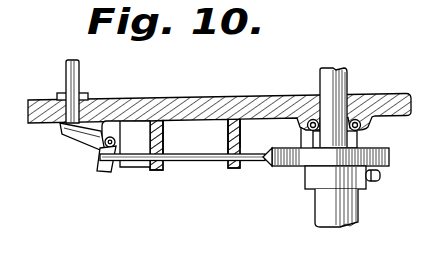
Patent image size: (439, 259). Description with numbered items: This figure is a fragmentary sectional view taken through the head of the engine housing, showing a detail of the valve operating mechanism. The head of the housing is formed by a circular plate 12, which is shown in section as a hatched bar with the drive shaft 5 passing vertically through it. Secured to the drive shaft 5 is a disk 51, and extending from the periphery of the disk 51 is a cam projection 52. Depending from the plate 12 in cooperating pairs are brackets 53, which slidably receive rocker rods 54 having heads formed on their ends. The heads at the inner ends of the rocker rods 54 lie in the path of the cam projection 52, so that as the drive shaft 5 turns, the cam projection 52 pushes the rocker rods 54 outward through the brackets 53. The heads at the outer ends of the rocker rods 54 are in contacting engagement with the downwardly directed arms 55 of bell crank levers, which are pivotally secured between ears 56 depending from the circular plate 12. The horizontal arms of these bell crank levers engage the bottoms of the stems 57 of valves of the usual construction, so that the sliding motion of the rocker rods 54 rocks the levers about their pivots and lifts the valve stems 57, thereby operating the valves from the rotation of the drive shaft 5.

The drive shaft 5 is at (338, 103).
The circular plate 12 is at (251, 104).
The disk 51 is at (390, 152).
The cam projection 52 is at (276, 165).
The brackets 53 is at (230, 137).
The rocker rods 54 is at (214, 162).
The downwardly directed arms 55 is at (103, 170).
The ears 56 is at (115, 141).
The stems 57 is at (78, 86).